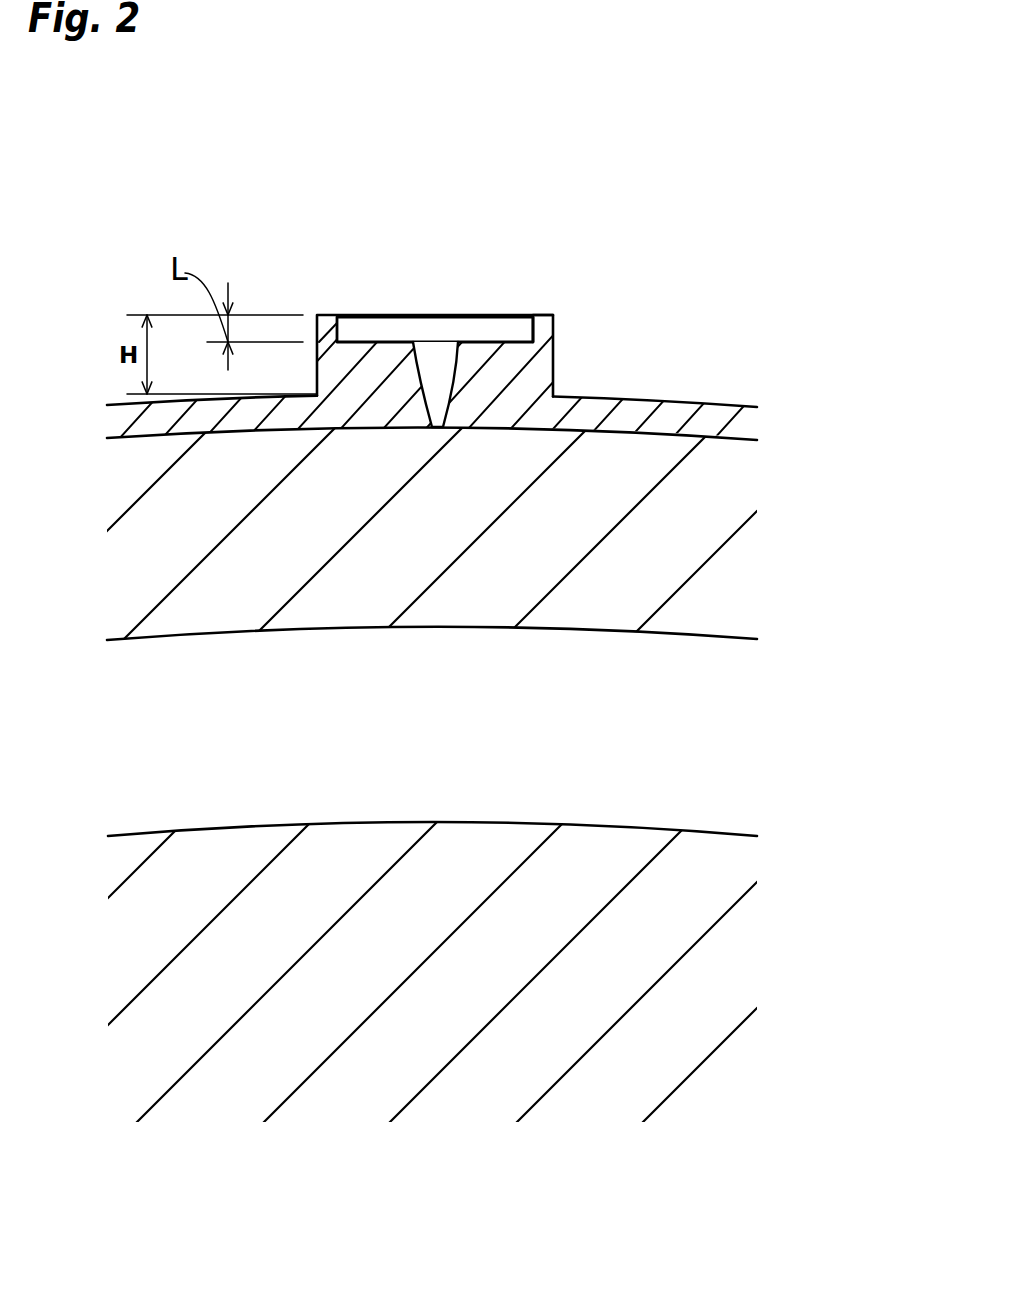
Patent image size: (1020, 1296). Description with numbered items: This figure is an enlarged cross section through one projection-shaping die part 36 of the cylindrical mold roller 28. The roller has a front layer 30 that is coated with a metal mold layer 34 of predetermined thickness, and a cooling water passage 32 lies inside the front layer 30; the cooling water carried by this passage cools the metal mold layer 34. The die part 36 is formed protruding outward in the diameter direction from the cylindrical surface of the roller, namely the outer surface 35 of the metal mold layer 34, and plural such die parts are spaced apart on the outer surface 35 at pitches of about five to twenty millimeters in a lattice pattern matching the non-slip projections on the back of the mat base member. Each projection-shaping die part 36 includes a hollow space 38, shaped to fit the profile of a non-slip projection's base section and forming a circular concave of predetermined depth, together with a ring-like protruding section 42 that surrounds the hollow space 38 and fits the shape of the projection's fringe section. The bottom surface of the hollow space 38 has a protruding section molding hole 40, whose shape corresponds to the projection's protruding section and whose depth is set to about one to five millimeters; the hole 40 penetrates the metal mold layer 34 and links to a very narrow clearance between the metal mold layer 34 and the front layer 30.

The cylindrical mold roller 28 is at (422, 383).
The front layer 30 is at (680, 537).
The cooling water passage 32 is at (692, 728).
The metal mold layer 34 is at (713, 421).
The outer surface 35 is at (630, 397).
The projection-shaping die part 36 is at (560, 337).
The hollow space 38 is at (482, 327).
The protruding section molding hole 40 is at (427, 360).
The ring-like protruding section 42 is at (543, 323).